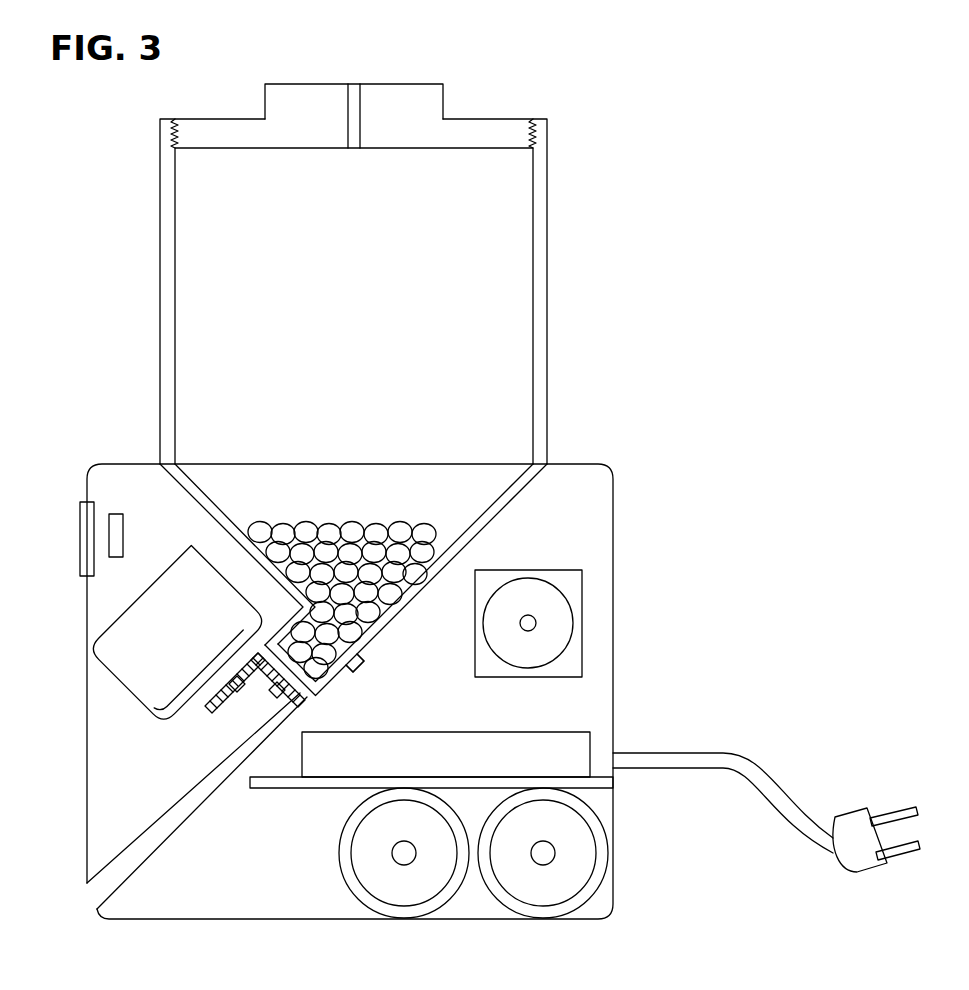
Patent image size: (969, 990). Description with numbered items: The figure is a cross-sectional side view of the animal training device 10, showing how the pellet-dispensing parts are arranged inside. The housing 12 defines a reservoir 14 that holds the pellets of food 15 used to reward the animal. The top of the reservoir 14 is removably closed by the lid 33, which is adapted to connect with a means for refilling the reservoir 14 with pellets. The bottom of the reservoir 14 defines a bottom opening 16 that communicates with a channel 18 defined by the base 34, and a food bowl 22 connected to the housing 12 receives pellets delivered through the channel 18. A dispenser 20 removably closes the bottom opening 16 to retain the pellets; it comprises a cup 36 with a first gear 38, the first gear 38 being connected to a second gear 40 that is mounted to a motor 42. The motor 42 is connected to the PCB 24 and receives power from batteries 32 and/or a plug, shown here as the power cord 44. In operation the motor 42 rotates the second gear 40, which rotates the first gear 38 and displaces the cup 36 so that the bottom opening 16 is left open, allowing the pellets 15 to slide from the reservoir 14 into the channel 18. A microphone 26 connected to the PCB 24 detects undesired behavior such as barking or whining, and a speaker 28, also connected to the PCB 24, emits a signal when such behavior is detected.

The dispensing apparatus 10 is at (728, 191).
The housing 12 is at (540, 320).
The reservoir 14 is at (508, 257).
The pellets of food 15 is at (397, 530).
The bottom opening 16 is at (283, 690).
The channel 18 is at (187, 802).
The dispenser 20 is at (165, 549).
The food bowl 22 is at (353, 93).
The PCB 24 is at (560, 757).
The microphone 26 is at (115, 542).
The speaker 28 is at (572, 668).
The batteries 32 is at (578, 870).
The lid 33 is at (325, 103).
The base 34 is at (613, 510).
The cup 36 is at (360, 664).
The first gear 38 is at (285, 688).
The second gear 40 is at (263, 683).
The motor 42 is at (162, 627).
The power cord 44 is at (727, 753).